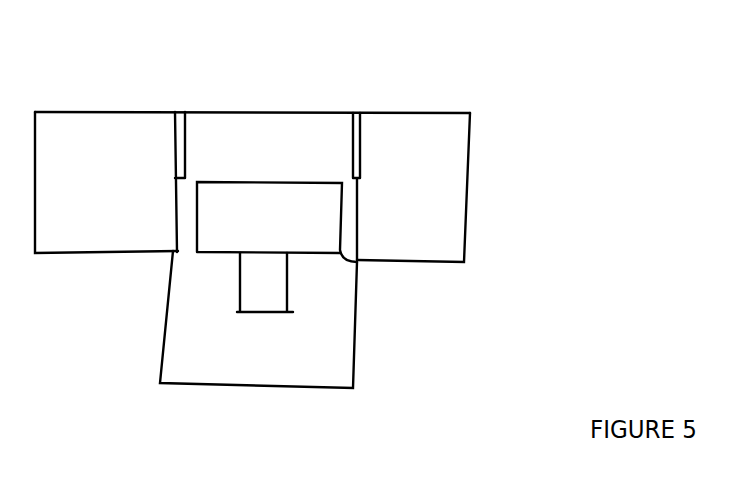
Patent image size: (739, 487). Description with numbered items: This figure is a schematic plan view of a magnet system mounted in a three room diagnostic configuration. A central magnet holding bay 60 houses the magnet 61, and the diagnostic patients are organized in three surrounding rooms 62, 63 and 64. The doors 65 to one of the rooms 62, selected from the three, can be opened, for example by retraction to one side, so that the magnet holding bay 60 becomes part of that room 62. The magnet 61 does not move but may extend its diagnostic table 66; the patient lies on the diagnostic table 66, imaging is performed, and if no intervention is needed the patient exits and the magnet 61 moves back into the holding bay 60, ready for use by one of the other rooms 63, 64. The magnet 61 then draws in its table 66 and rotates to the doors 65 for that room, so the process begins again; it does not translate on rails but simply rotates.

The central magnet holding bay 60 is at (293, 133).
The magnet 61 is at (228, 207).
The room 62 is at (435, 187).
The room 63 is at (332, 362).
The room 64 is at (107, 223).
The doors 65 is at (357, 233).
The diagnostic table 66 is at (262, 297).